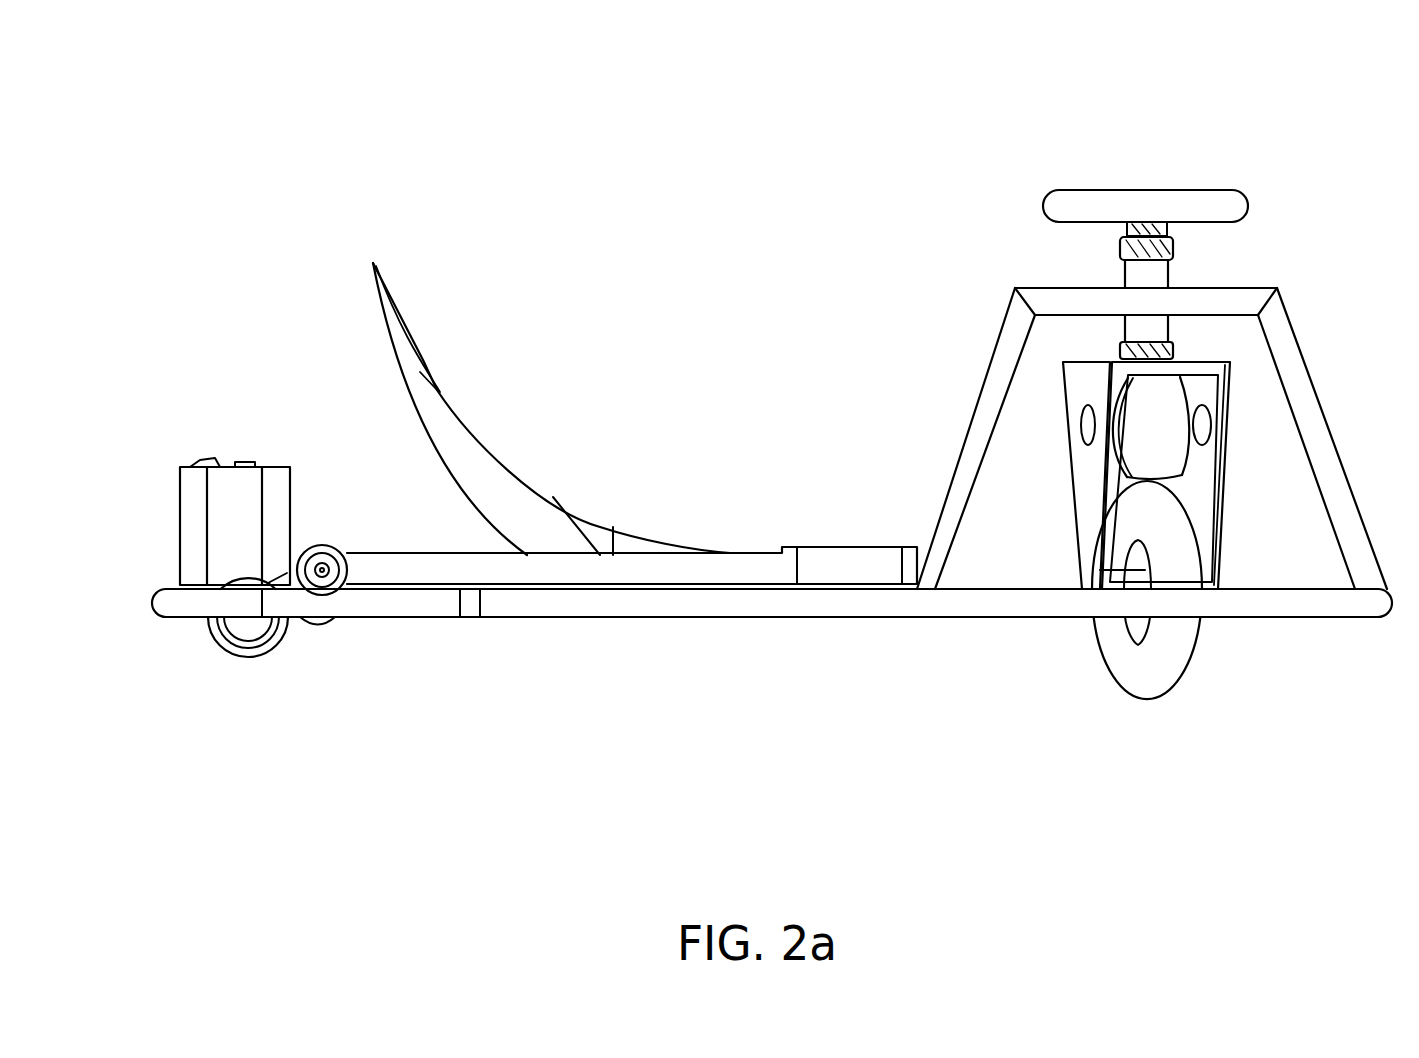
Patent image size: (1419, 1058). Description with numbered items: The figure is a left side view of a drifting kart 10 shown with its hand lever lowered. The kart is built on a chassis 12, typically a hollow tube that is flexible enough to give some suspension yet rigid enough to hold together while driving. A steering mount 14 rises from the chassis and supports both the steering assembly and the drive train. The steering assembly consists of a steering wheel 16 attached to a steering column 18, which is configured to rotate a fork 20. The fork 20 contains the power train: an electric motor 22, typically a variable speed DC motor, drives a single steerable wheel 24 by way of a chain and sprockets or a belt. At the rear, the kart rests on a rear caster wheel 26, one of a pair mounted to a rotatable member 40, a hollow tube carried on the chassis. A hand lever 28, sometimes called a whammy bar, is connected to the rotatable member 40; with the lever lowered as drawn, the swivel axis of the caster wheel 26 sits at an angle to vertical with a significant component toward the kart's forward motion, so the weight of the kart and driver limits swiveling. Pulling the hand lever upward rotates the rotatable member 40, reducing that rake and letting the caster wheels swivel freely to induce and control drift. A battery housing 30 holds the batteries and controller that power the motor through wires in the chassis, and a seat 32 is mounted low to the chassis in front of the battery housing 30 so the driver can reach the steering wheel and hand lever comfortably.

The drifting kart 10 is at (355, 195).
The chassis 12 is at (777, 620).
The steering mount 14 is at (998, 345).
The steering wheel 16 is at (1250, 190).
The steering column 18 is at (1128, 268).
The fork 20 is at (1230, 395).
The electric motor 22 is at (1168, 420).
The steerable wheel 24 is at (1168, 662).
The rear caster wheel 26 is at (240, 657).
The hand lever 28 is at (757, 552).
The battery housing 30 is at (232, 462).
The seat 32 is at (458, 363).
The rotatable member 40 is at (340, 593).